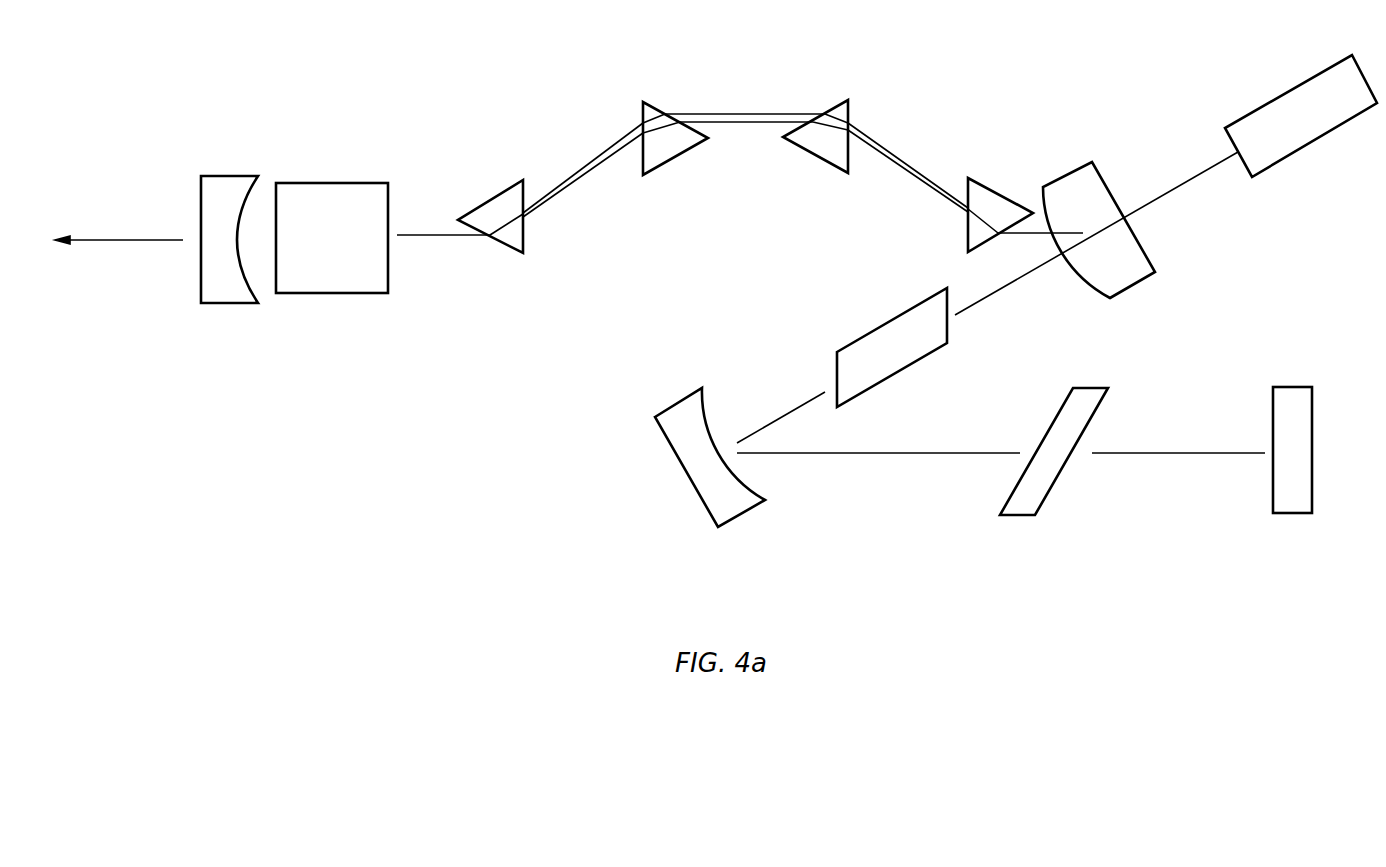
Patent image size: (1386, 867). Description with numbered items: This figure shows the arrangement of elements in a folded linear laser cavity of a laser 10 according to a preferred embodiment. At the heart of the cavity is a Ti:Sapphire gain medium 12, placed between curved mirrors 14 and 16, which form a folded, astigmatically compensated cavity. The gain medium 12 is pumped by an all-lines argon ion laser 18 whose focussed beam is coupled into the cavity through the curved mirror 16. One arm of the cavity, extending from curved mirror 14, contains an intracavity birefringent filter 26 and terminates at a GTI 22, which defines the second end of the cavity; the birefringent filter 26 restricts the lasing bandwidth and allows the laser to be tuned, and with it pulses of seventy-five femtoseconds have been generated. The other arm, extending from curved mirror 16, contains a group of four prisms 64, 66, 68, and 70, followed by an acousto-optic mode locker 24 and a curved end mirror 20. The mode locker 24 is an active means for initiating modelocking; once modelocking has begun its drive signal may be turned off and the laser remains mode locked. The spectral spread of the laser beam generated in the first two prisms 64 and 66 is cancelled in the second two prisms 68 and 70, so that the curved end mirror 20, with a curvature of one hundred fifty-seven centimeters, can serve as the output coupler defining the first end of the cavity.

The laser system 10 is at (842, 542).
The Ti:Sapphire gain medium 12 is at (947, 335).
The curved mirror 14 is at (660, 427).
The curved mirror 16 is at (1142, 250).
The argon ion laser 18 is at (1333, 130).
The output coupler 20 is at (201, 278).
The GTI 22 is at (1312, 398).
The acousto-optic modelocker 24 is at (389, 184).
The birefringent filter 26 is at (1102, 401).
The prism 64 is at (984, 186).
The prism 66 is at (845, 100).
The prism 68 is at (648, 102).
The prism 70 is at (512, 251).